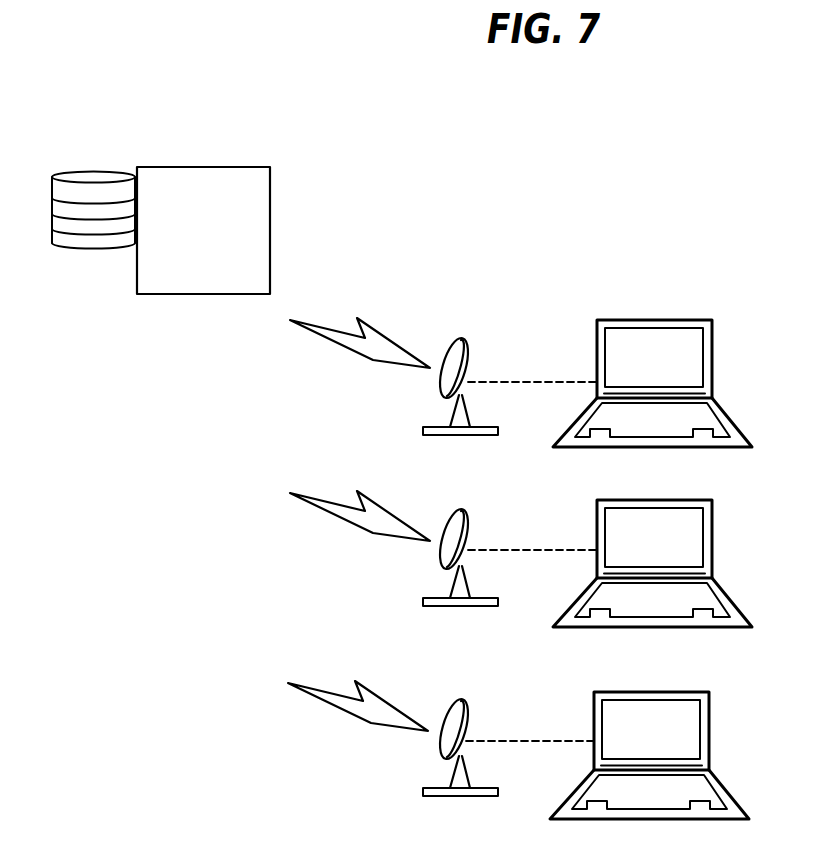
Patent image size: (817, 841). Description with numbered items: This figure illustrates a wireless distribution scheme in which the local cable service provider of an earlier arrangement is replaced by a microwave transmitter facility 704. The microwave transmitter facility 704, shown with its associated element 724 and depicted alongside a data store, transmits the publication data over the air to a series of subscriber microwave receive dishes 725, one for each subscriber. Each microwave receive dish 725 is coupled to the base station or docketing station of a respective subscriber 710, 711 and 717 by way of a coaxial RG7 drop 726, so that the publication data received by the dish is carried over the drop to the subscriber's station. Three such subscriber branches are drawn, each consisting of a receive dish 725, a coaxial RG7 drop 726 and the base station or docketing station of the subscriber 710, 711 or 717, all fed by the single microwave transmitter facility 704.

The microwave transmitter facility 704 is at (223, 242).
The microwave transmitter facility reference 724 is at (161, 178).
The subscriber microwave receive dish 725 is at (463, 338).
The coaxial RG7 drop 726 is at (535, 378).
The subscriber 710 is at (713, 335).
The subscriber 711 is at (712, 528).
The subscriber 717 is at (710, 713).